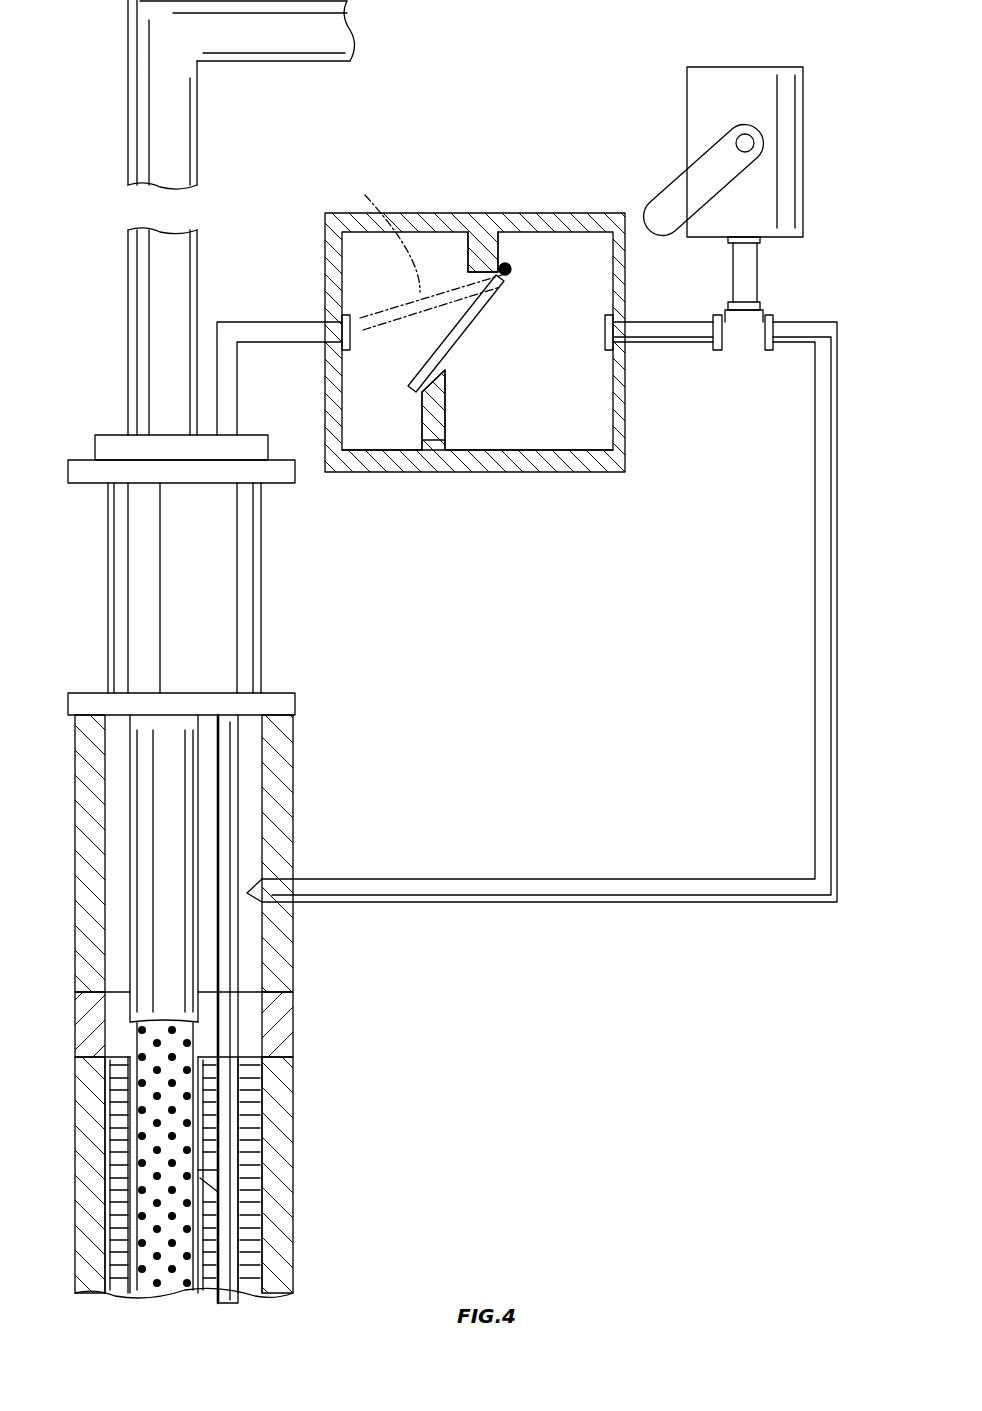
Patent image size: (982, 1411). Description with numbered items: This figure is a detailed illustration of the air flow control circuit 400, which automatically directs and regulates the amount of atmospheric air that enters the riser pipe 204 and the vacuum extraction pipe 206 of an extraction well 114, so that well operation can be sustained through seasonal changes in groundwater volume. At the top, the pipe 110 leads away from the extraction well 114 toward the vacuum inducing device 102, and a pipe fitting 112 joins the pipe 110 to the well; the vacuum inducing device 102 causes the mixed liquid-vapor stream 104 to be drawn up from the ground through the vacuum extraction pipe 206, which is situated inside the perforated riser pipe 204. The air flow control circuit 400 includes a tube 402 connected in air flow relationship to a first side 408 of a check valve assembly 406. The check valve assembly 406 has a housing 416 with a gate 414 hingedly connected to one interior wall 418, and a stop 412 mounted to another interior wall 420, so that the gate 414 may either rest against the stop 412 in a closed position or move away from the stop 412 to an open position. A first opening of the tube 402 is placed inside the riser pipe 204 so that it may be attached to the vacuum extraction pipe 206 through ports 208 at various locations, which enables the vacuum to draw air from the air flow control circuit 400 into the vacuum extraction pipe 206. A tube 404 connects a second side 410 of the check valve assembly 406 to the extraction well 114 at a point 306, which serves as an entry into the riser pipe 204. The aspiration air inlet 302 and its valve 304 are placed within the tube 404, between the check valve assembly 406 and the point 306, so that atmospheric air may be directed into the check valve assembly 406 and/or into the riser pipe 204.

The vacuum inducing device 102 is at (358, 27).
The mixed liquid-vapor stream 104 is at (172, 1100).
The pipe 110 is at (182, 132).
The pipe fitting 112 is at (262, 443).
The extraction well 114 is at (365, 1181).
The riser pipe 204 is at (287, 1073).
The vacuum extraction pipe 206 is at (175, 943).
The ports 208 is at (212, 1180).
The aspiration air inlet 302 is at (693, 78).
The valve 304 is at (658, 208).
The point 306 is at (260, 907).
The air flow control circuit 400 is at (694, 464).
The tube 402 is at (262, 325).
The tube 404 is at (820, 627).
The check valve assembly 406 is at (392, 510).
The first side 408 is at (345, 352).
The second side 410 is at (610, 402).
The stop 412 is at (440, 412).
The gate 414 is at (463, 313).
The housing 416 is at (597, 455).
The interior wall 418 is at (478, 250).
The interior wall 420 is at (437, 437).